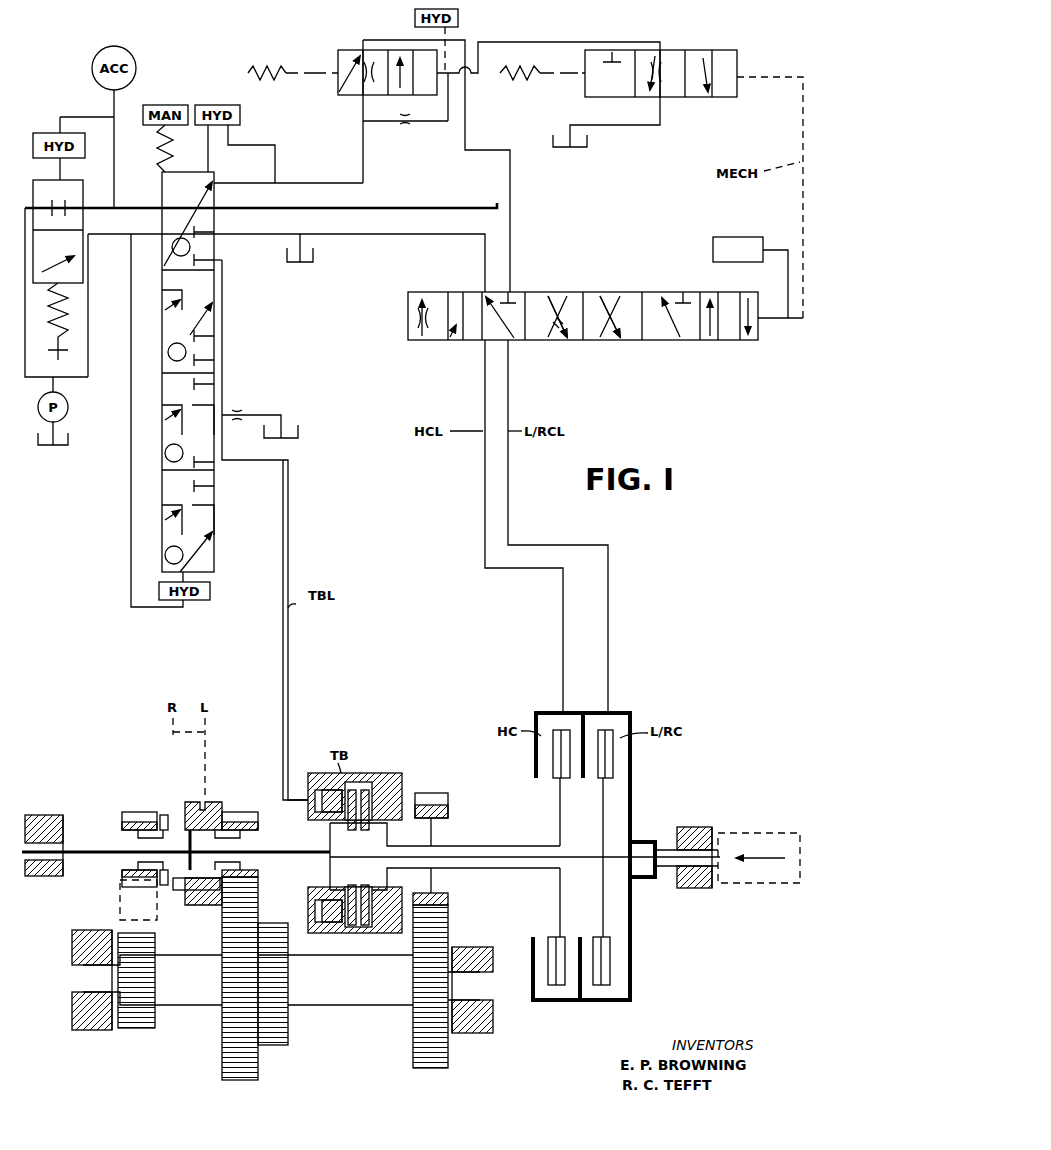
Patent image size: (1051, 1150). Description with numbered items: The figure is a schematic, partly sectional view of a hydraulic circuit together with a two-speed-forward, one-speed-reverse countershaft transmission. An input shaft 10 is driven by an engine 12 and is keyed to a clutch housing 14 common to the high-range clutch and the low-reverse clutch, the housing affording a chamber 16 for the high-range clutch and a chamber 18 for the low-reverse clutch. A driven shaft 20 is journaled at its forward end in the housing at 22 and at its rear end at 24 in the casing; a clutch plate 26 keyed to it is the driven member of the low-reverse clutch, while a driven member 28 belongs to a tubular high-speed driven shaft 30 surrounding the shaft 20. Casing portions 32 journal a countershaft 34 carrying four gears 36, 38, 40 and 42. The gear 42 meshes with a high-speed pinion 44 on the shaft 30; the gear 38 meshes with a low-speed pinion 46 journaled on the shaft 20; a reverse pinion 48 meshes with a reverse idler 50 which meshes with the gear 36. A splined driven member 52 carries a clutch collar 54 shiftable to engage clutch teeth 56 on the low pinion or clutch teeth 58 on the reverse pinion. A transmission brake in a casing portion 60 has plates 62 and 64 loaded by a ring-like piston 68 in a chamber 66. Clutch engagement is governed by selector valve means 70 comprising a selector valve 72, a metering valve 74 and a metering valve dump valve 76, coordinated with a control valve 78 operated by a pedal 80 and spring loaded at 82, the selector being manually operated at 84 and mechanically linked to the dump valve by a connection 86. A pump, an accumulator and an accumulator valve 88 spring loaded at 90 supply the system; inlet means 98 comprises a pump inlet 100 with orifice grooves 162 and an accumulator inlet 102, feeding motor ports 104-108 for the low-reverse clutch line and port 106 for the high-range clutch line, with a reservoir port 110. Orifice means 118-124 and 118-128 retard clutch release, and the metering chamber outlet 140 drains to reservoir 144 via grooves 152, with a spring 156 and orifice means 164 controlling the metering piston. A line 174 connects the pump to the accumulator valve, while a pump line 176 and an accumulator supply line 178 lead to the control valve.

The input shaft 10 is at (668, 852).
The internal combustion engine 12 is at (760, 833).
The clutch housing 14 is at (628, 712).
The fluid-pressure-receivable chamber 16 is at (548, 722).
The fluid-pressure-receivable chamber 18 is at (622, 776).
The driven shaft 20 is at (588, 857).
The forward journal 22 is at (649, 879).
The rear journal 24 is at (62, 838).
The clutch plate 26 is at (603, 805).
The driven member 28 is at (560, 805).
The high-speed driven shaft 30 is at (522, 846).
The transmission casing portions 32 is at (100, 1015).
The countershaft 34 is at (346, 1006).
The countershaft gear 36 is at (137, 1028).
The countershaft gear 38 is at (237, 1080).
The countershaft gear 40 is at (275, 1045).
The countershaft gear 42 is at (428, 1068).
The high-speed pinion 44 is at (440, 803).
The low-speed pinion 46 is at (248, 812).
The reverse pinion 48 is at (135, 812).
The reverse idler 50 is at (120, 900).
The externally splined driven member 52 is at (180, 891).
The clutch collar 54 is at (214, 802).
The clutch teeth 56 is at (212, 895).
The clutch teeth 58 is at (165, 815).
The transmission casing portion 60 is at (362, 773).
The brake plate 62 is at (366, 830).
The brake plate 64 is at (353, 928).
The fluid-pressure-receivable chamber 66 is at (320, 790).
The ring-like piston 68 is at (330, 905).
The selector valve means 70 is at (580, 232).
The selector valve 72 is at (640, 342).
The metering valve 74 is at (345, 50).
The metering valve dump valve 76 is at (735, 50).
The control valve 78 is at (214, 503).
The clutch pedal 80 is at (168, 105).
The spring 82 is at (158, 142).
The manual control 84 is at (750, 237).
The mechanical interconnection 86 is at (803, 125).
The accumulator valve 88 is at (82, 188).
The spring 90 is at (56, 340).
The inlet means 98 is at (514, 288).
The pump inlet 100 is at (336, 183).
The accumulator inlet 102 is at (508, 220).
The motor ports 104-108 is at (508, 342).
The motor port 106 is at (484, 344).
The drain or reservoir port 110 is at (407, 238).
The orifice means 118-124 is at (418, 320).
The orifice means 118-128 is at (548, 342).
The outlet 140 is at (620, 34).
The reservoir connection 144 is at (575, 150).
The grooves 152 is at (668, 72).
The coiled compression spring 156 is at (250, 68).
The longitudinal grooves 162 is at (339, 88).
The orifice means 164 is at (404, 126).
The line 174 is at (33, 365).
The pump line 176 is at (88, 365).
The accumulator supply line 178 is at (127, 207).